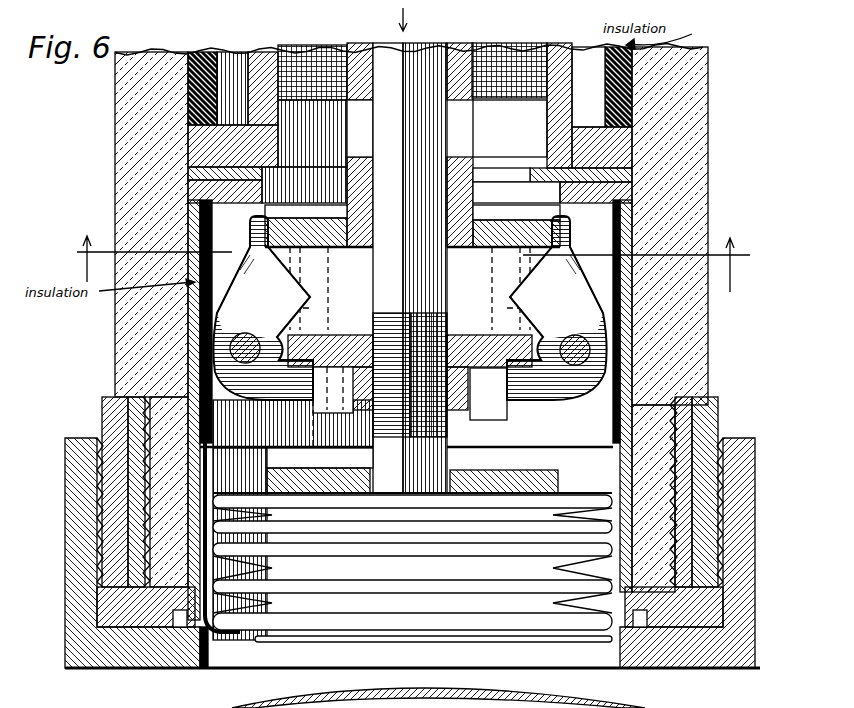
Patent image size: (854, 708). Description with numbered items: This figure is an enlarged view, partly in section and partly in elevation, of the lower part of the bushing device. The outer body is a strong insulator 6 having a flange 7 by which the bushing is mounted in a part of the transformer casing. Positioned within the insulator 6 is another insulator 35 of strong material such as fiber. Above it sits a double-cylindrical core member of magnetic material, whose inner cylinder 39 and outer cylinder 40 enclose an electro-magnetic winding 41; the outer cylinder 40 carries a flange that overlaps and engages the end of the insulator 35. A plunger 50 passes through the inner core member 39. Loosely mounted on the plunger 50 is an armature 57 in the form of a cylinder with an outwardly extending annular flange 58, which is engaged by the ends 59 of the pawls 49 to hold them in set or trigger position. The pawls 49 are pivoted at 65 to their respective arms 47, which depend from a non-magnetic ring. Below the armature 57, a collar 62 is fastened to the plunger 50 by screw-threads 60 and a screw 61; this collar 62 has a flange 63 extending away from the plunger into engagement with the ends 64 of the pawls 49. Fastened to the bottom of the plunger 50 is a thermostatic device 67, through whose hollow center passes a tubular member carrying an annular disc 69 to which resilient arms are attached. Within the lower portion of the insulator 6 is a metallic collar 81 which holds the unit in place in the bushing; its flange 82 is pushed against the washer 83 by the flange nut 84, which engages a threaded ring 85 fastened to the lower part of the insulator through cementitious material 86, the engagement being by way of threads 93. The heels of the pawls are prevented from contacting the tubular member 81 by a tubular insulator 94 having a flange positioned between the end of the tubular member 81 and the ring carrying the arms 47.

The insulator 6 is at (123, 178).
The flange 7 is at (413, 264).
The insulator 35 is at (200, 63).
The inner cylinder 39 is at (460, 102).
The outer cylinder 40 is at (546, 131).
The electro-magnetic winding 41 is at (528, 102).
The arms 47 is at (590, 262).
The pawls 49 is at (518, 293).
The plunger 50 is at (440, 452).
The armature 57 is at (478, 156).
The annular flange 58 is at (310, 252).
The ends 59 is at (567, 232).
The screw-threads 60 is at (377, 430).
The screw 61 is at (487, 395).
The collar 62 is at (474, 410).
The flange 63 is at (473, 337).
The ends 64 is at (313, 387).
The pivot 65 is at (582, 357).
The thermostatic device 67 is at (257, 642).
The annular disc 69 is at (350, 470).
The metallic collar 81 is at (613, 442).
The flange 82 is at (182, 623).
The washer 83 is at (97, 617).
The flange nut 84 is at (66, 477).
The threaded ring 85 is at (102, 423).
The cementitious material 86 is at (130, 563).
The threads 93 is at (100, 530).
The tubular insulator 94 is at (210, 443).